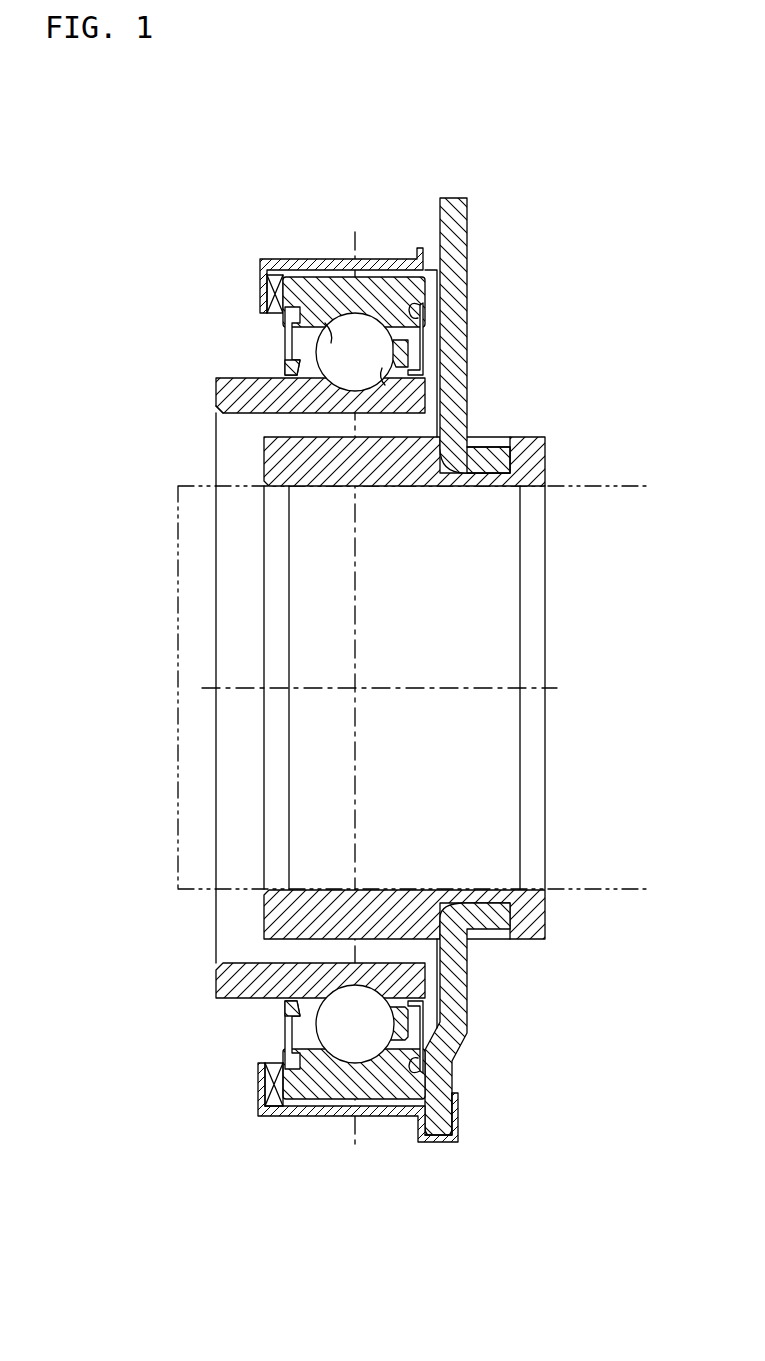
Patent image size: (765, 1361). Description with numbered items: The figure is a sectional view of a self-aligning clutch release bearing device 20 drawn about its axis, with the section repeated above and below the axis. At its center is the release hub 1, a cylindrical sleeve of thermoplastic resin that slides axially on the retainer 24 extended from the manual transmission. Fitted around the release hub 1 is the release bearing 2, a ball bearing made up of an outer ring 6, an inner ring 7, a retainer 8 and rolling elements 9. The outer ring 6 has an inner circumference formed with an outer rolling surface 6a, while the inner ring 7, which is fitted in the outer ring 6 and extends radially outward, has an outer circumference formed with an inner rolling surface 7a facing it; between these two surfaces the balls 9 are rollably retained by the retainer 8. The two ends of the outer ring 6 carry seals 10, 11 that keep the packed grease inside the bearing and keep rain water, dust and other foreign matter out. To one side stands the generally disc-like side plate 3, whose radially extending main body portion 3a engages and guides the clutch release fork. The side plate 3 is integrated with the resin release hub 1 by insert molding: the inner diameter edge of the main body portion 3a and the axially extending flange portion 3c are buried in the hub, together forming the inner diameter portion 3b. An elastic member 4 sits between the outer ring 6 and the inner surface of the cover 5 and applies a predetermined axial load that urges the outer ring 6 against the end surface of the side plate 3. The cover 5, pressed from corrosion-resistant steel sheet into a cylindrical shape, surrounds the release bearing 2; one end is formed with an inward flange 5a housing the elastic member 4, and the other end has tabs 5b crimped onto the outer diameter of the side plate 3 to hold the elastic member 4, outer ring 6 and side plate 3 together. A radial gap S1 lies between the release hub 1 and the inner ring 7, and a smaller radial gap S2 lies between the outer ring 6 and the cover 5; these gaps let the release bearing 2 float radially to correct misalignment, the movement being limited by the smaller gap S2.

The release hub 1 is at (312, 462).
The release bearing 2 is at (331, 309).
The side plate 3 is at (527, 653).
The main body portion 3a is at (455, 222).
The inner diameter portion 3b is at (510, 458).
The flange portion 3c is at (483, 457).
The elastic member 4 is at (262, 284).
The cover 5 is at (340, 1135).
The inward flange 5a is at (258, 1082).
The tabs 5b is at (453, 1137).
The outer ring 6 is at (363, 297).
The outer rolling surface 6a is at (325, 318).
The inner ring 7 is at (274, 405).
The inner rolling surface 7a is at (217, 412).
The retainer 8 is at (400, 350).
The rolling elements 9 is at (335, 347).
The seal 10 is at (285, 357).
The seal 11 is at (425, 327).
The clutch release bearing device 20 is at (430, 178).
The retainer 24 is at (608, 897).
The radial gap S1 is at (397, 425).
The radial gap S2 is at (330, 273).